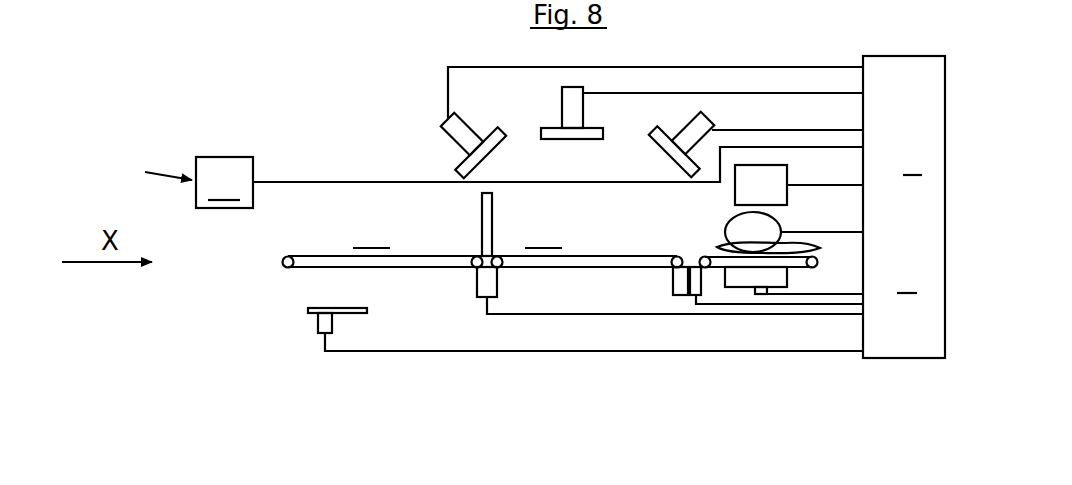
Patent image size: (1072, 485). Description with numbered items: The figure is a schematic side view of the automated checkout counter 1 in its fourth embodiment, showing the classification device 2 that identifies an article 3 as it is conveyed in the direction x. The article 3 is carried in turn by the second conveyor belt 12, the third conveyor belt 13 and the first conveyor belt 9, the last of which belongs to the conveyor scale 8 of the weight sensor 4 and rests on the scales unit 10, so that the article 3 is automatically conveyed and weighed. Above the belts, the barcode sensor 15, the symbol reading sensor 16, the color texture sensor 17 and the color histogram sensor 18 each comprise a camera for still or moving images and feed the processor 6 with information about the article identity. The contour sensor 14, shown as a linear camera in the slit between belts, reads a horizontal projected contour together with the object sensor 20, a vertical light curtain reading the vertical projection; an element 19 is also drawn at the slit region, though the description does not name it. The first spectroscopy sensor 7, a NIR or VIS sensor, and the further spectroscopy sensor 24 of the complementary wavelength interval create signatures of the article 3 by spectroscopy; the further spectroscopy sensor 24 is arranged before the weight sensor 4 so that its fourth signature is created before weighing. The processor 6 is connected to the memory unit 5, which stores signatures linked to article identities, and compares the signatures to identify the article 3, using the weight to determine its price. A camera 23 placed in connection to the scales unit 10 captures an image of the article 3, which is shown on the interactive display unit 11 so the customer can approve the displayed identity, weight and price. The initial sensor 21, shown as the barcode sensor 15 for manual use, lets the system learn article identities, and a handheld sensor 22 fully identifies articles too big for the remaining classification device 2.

The automated checkout counter 1 is at (225, 287).
The classification device 2 is at (430, 226).
The article 3 is at (821, 246).
The weight sensor 4 is at (740, 285).
The memory unit 5 is at (904, 207).
The processor 6 is at (907, 279).
The first spectroscopy sensor 7 is at (698, 307).
The conveyor scale 8 is at (772, 276).
The first conveyor belt 9 is at (792, 271).
The scales unit 10 is at (760, 292).
The interactive display unit 11 is at (799, 186).
The second conveyor belt 12 is at (371, 236).
The third conveyor belt 13 is at (543, 236).
The contour sensor 14 is at (487, 300).
The barcode sensor 15 is at (529, 177).
The symbol reading sensor 16 is at (714, 121).
The color texture sensor 17 is at (560, 105).
The color histogram sensor 18 is at (445, 120).
The rollers 19 is at (498, 286).
The object sensor 20 is at (479, 226).
The initial sensor 21 is at (148, 179).
The handheld sensor 22 is at (307, 321).
The camera 23 is at (780, 217).
The further spectroscopy sensor 24 is at (678, 299).